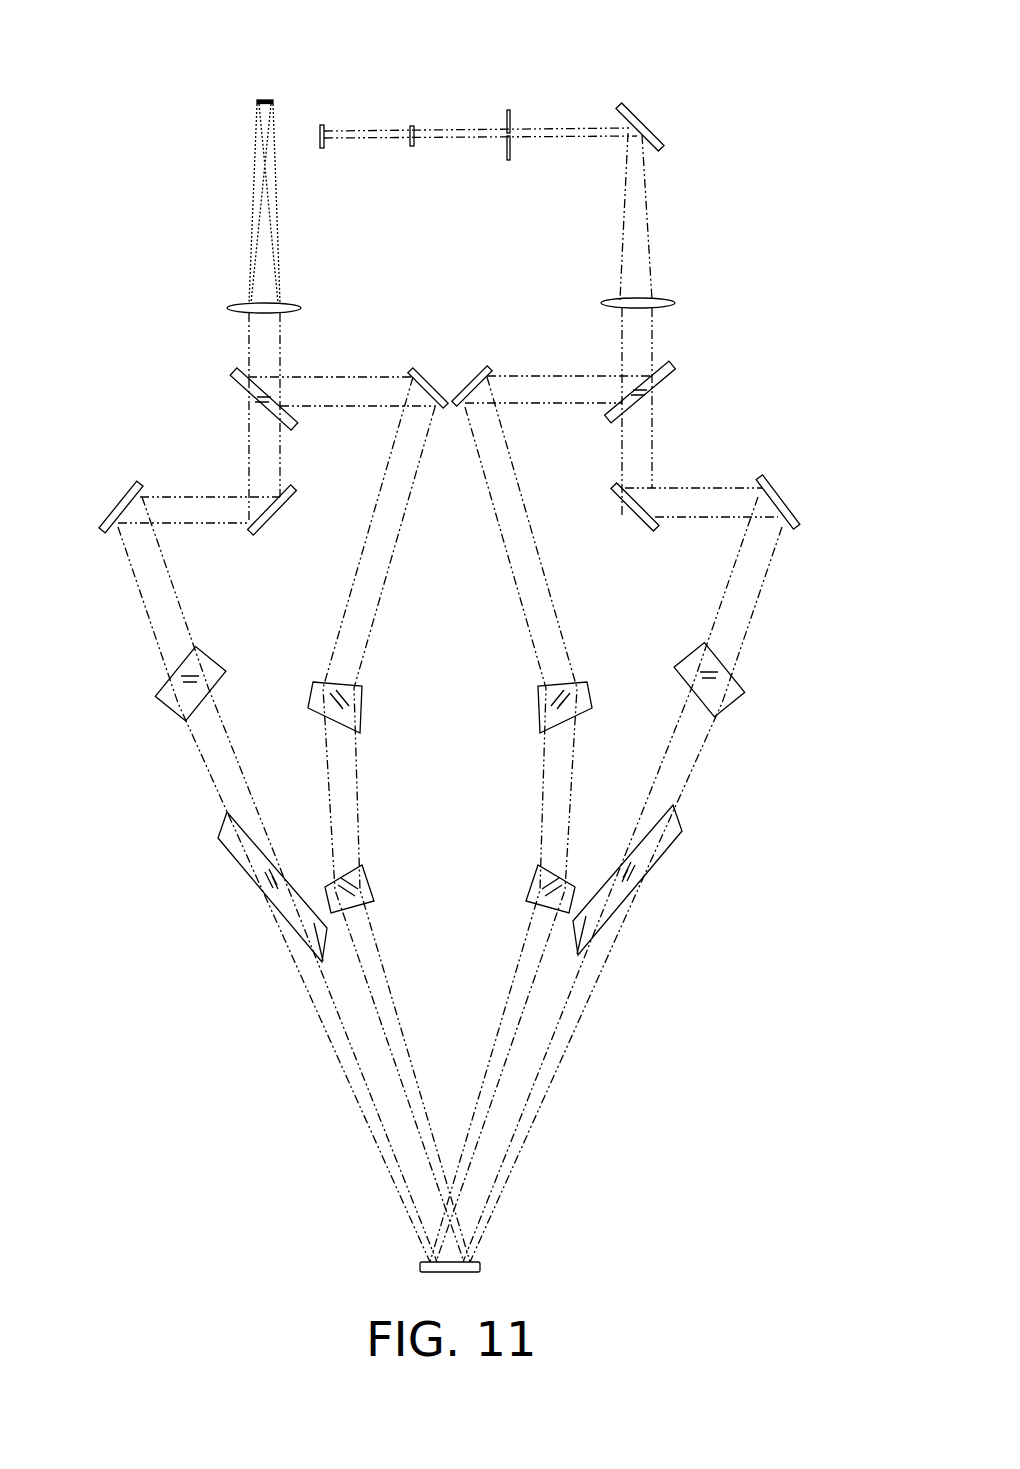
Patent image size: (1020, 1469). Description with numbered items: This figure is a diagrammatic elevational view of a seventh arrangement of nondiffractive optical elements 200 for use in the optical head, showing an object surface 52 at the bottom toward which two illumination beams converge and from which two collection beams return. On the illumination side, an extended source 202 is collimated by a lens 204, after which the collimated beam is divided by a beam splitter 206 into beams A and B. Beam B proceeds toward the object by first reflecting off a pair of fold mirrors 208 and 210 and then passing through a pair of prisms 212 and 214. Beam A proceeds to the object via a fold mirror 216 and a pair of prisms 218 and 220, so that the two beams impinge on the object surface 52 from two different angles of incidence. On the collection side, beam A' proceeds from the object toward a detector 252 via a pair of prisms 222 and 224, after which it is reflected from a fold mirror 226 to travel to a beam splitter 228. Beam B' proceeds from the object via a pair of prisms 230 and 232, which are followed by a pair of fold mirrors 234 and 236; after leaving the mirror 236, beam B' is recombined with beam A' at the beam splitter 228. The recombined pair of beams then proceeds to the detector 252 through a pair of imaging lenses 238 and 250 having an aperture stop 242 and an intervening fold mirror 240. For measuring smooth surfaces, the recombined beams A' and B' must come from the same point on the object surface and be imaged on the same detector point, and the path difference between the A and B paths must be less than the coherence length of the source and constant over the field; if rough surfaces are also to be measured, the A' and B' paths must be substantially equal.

The seventh arrangement of nondiffractive optical elements 200 is at (486, 66).
The extended source 202 is at (263, 98).
The lens 204 is at (286, 303).
The beam splitter 206 is at (241, 392).
The fold mirror 208 is at (257, 535).
The fold mirror 210 is at (125, 493).
The prism 212 is at (172, 712).
The prism 214 is at (293, 927).
The fold mirror 216 is at (427, 363).
The prism 218 is at (362, 711).
The prism 220 is at (368, 883).
The prism 222 is at (524, 868).
The prism 224 is at (567, 677).
The fold mirror 226 is at (475, 365).
The beam splitter 228 is at (664, 380).
The prism 230 is at (640, 885).
The prism 232 is at (733, 695).
The fold mirror 234 is at (772, 477).
The fold mirror 236 is at (637, 517).
The imaging lens 238 is at (658, 297).
The fold mirror 240 is at (646, 118).
The aperture stop 242 is at (513, 117).
The imaging lens 250 is at (408, 148).
The detector 252 is at (320, 150).
The sample 52 is at (481, 1260).